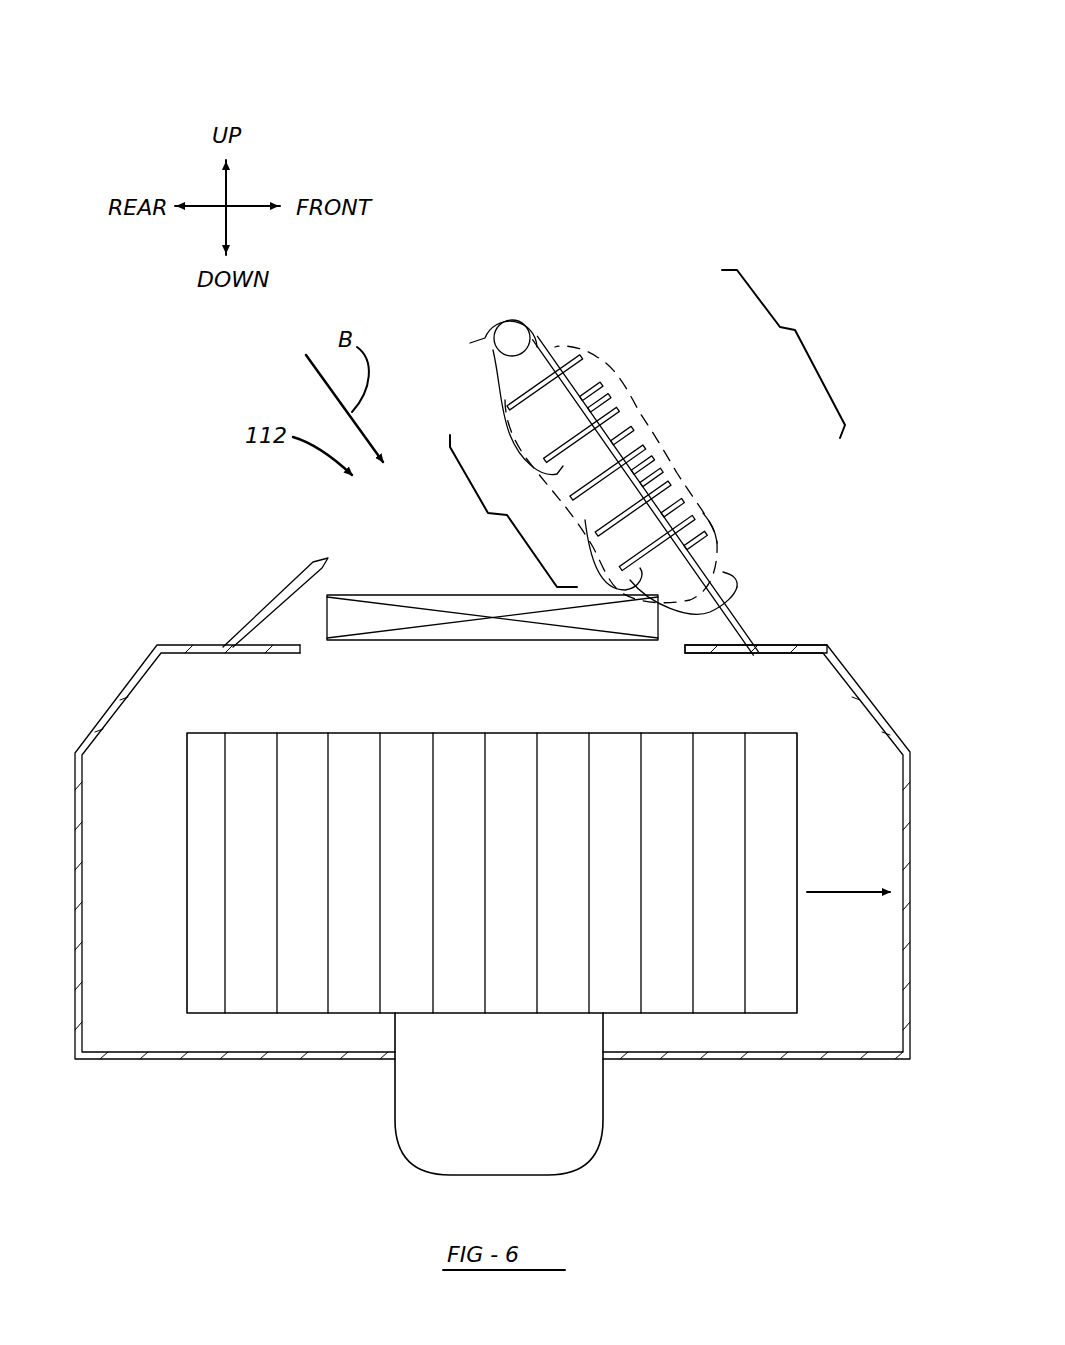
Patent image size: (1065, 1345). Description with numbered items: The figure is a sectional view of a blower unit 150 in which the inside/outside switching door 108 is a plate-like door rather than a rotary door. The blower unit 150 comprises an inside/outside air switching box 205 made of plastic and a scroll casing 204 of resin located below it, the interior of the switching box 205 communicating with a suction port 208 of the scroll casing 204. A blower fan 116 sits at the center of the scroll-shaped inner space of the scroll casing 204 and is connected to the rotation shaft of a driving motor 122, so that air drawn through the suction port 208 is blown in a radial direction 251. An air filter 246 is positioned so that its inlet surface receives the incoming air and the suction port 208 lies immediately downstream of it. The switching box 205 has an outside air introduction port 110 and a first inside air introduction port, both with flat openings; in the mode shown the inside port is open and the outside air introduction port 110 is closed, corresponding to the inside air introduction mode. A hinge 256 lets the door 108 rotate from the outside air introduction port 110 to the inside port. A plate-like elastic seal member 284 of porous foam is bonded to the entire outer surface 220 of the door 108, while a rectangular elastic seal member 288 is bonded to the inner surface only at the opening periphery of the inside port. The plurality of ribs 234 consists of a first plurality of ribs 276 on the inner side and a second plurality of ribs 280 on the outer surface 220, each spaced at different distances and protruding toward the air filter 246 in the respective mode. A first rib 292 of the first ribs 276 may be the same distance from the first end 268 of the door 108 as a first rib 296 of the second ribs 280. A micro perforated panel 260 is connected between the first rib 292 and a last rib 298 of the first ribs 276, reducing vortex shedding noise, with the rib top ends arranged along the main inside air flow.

The blower unit 150 is at (130, 95).
The scroll casing 204 is at (80, 848).
The blower fan 116 is at (187, 975).
The driving motor 122 is at (393, 1118).
The radial direction 251 is at (838, 892).
The air filter 246 is at (327, 617).
The inside/outside air switching box 205 is at (760, 632).
The suction port 208 is at (622, 697).
The first plurality of ribs 276 is at (508, 511).
The second plurality of ribs 280 is at (783, 354).
The first rib 292 is at (587, 587).
The last rib 298 is at (518, 340).
The hinge 256 is at (518, 333).
The micro perforated panel 260 is at (497, 410).
The outer surface 220 is at (578, 380).
The inside/outside switching door 108 is at (512, 425).
The plate-like elastic seal member 284 is at (610, 422).
The plurality of ribs 234 is at (673, 460).
The outside air introduction port 110 is at (678, 483).
The rectangular elastic seal member 288 is at (737, 603).
The first end 268 is at (723, 572).
The first rib 296 is at (715, 530).